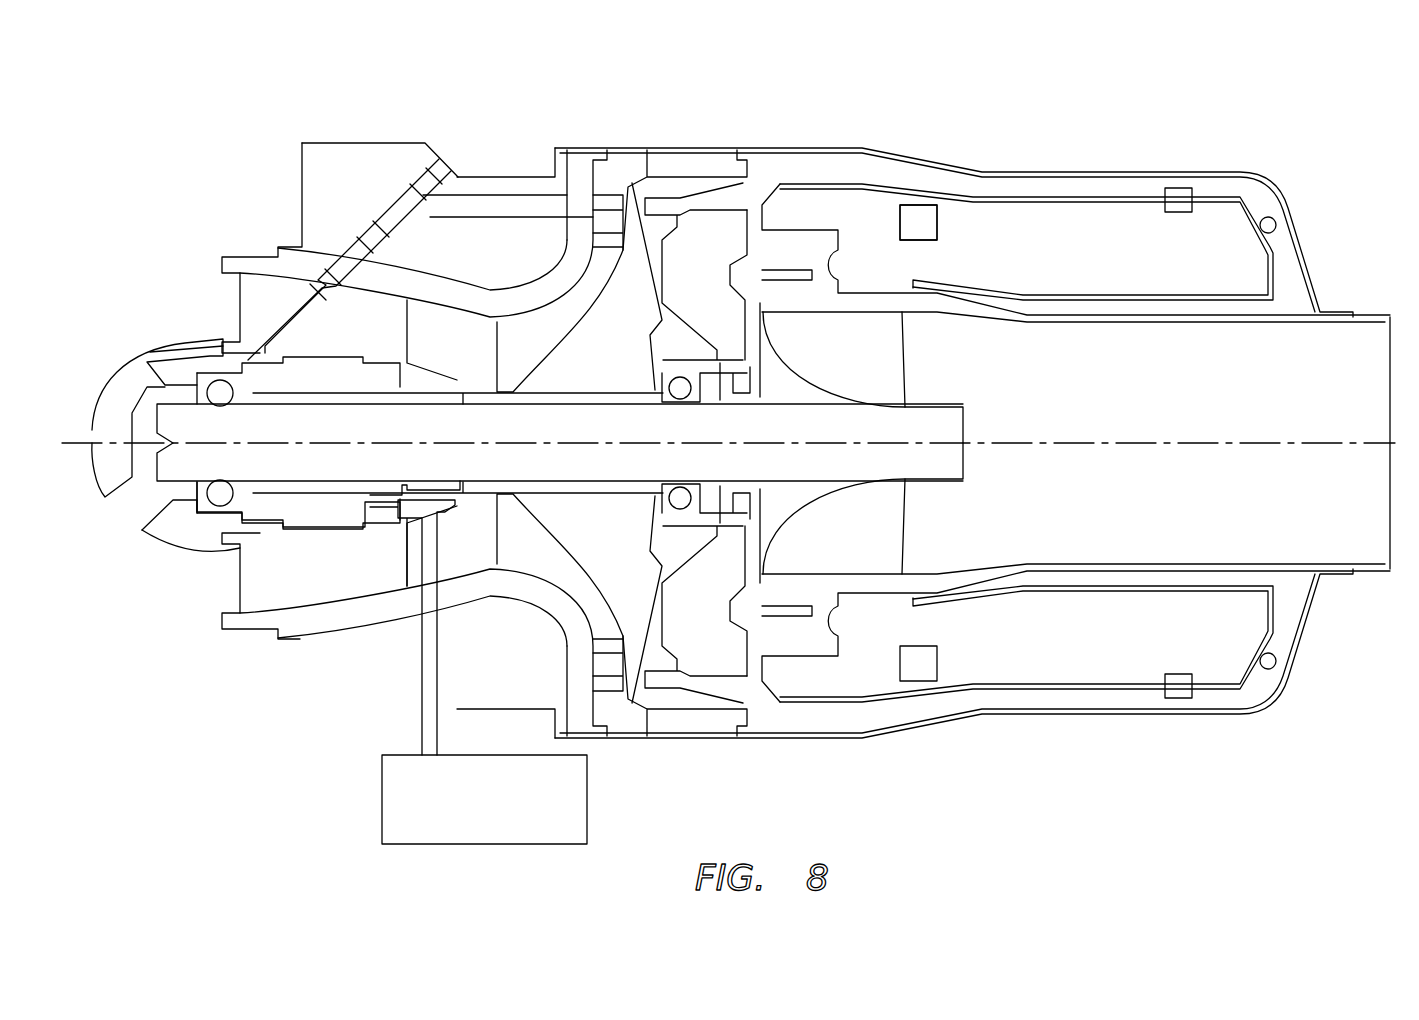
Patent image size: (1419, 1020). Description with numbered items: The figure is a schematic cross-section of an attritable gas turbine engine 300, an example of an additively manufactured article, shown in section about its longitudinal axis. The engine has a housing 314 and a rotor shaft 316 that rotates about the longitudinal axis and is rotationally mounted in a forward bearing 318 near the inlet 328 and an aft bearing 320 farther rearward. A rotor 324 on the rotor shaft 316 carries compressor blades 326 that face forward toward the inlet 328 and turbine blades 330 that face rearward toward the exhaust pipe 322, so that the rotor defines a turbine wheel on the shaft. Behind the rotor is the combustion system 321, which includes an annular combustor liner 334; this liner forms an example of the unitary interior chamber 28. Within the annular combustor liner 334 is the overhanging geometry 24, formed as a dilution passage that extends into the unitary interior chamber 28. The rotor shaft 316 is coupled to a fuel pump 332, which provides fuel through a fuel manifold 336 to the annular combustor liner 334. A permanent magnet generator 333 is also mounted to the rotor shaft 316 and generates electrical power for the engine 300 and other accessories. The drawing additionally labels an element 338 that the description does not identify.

The attritable gas turbine engine 300 is at (1062, 120).
The overhanging geometry 24 is at (885, 205).
The unitary interior chamber 28 is at (950, 175).
The combustion system 321 is at (1148, 178).
The fuel manifold 336 is at (1182, 188).
The exhaust pipe 322 is at (1370, 316).
The annular combustor liner 334 is at (1070, 254).
The turbine blades 330 is at (838, 426).
The rotor shaft 316 is at (478, 456).
The aft bearing 320 is at (668, 410).
The compressor blades 326 is at (652, 514).
The rotor 324 is at (585, 330).
The fuel pump 332 is at (310, 330).
The forward bearing 318 is at (208, 512).
The inlet 328 is at (265, 583).
The housing 314 is at (325, 628).
The permanent magnet generator 333 is at (505, 809).
The lower casing 338 is at (928, 735).